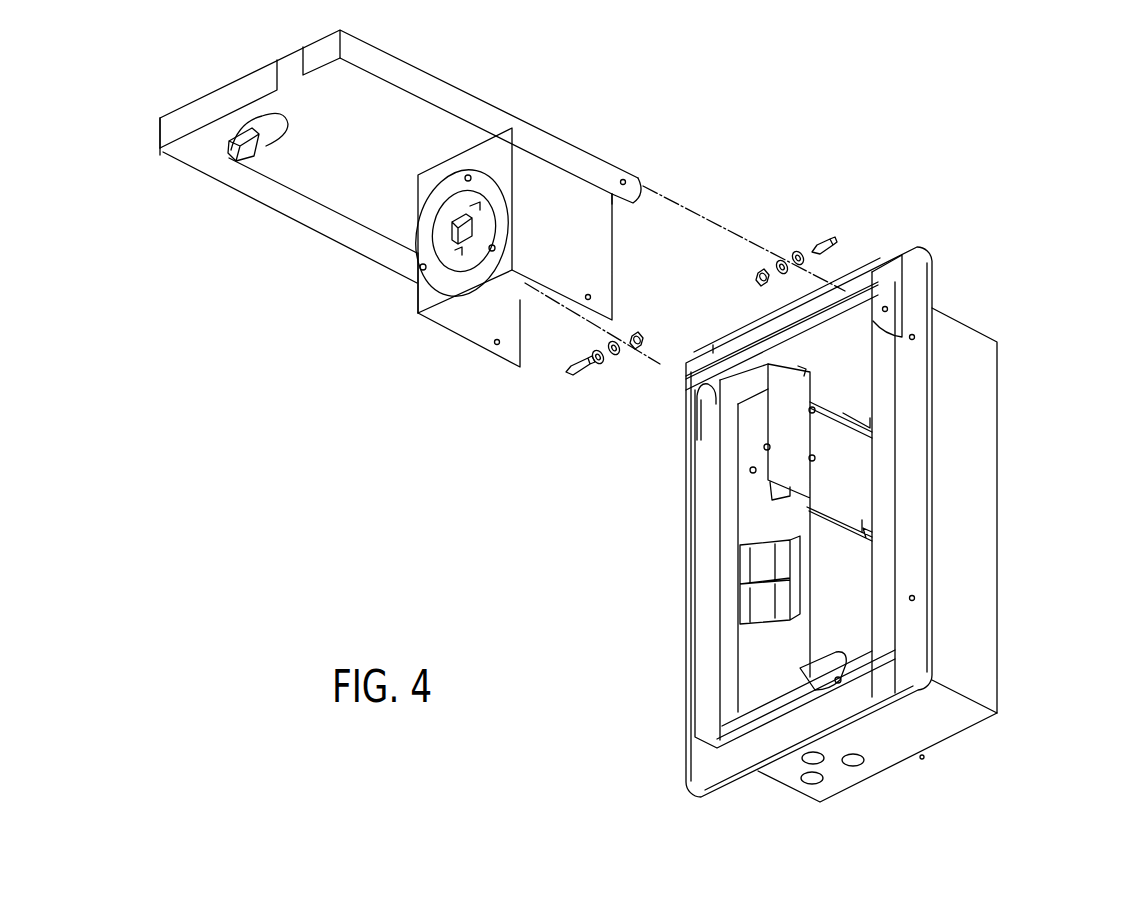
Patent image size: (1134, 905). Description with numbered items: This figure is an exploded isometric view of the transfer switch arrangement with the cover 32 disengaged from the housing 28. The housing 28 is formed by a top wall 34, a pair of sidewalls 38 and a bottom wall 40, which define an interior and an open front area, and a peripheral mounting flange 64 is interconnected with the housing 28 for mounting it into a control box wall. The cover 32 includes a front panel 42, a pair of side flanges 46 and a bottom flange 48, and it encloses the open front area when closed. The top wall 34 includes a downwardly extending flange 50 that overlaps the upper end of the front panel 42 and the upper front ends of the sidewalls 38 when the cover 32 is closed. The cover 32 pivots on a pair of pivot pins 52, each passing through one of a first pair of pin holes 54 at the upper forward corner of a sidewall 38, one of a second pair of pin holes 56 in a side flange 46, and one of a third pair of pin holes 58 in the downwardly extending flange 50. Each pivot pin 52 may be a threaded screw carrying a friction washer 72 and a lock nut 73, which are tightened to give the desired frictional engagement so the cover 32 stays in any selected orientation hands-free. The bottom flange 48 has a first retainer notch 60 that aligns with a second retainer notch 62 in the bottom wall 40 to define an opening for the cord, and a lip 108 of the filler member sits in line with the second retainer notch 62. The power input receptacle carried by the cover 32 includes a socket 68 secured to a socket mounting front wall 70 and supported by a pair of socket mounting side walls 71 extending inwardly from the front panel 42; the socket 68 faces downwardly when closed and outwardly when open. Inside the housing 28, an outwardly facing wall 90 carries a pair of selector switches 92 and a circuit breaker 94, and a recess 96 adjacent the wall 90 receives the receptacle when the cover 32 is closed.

The housing 28 is at (1000, 334).
The cover 32 is at (413, 52).
The top wall 34 is at (833, 340).
The sidewalls 38 is at (990, 490).
The bottom wall 40 is at (945, 722).
The front panel 42 is at (280, 166).
The side flanges 46 is at (490, 112).
The bottom flange 48 is at (205, 100).
The downwardly extending flange 50 is at (885, 270).
The pivot pins 52 is at (567, 374).
The first pair of pin holes 54 is at (700, 426).
The second pair of pin holes 56 is at (624, 179).
The third pair of pin holes 58 is at (890, 312).
The first retainer notch 60 is at (302, 51).
The second retainer notch 62 is at (840, 684).
The peripheral mounting flange 64 is at (937, 462).
The socket 68 is at (425, 292).
The socket mounting front wall 70 is at (497, 140).
The socket mounting side walls 71 is at (570, 188).
The friction washers 72 is at (618, 356).
The lock nut 73 is at (757, 278).
The outwardly facing wall 90 is at (745, 690).
The selector switches 92 is at (740, 556).
The circuit breaker 94 is at (770, 478).
The recess 96 is at (860, 562).
The lip 108 is at (822, 664).